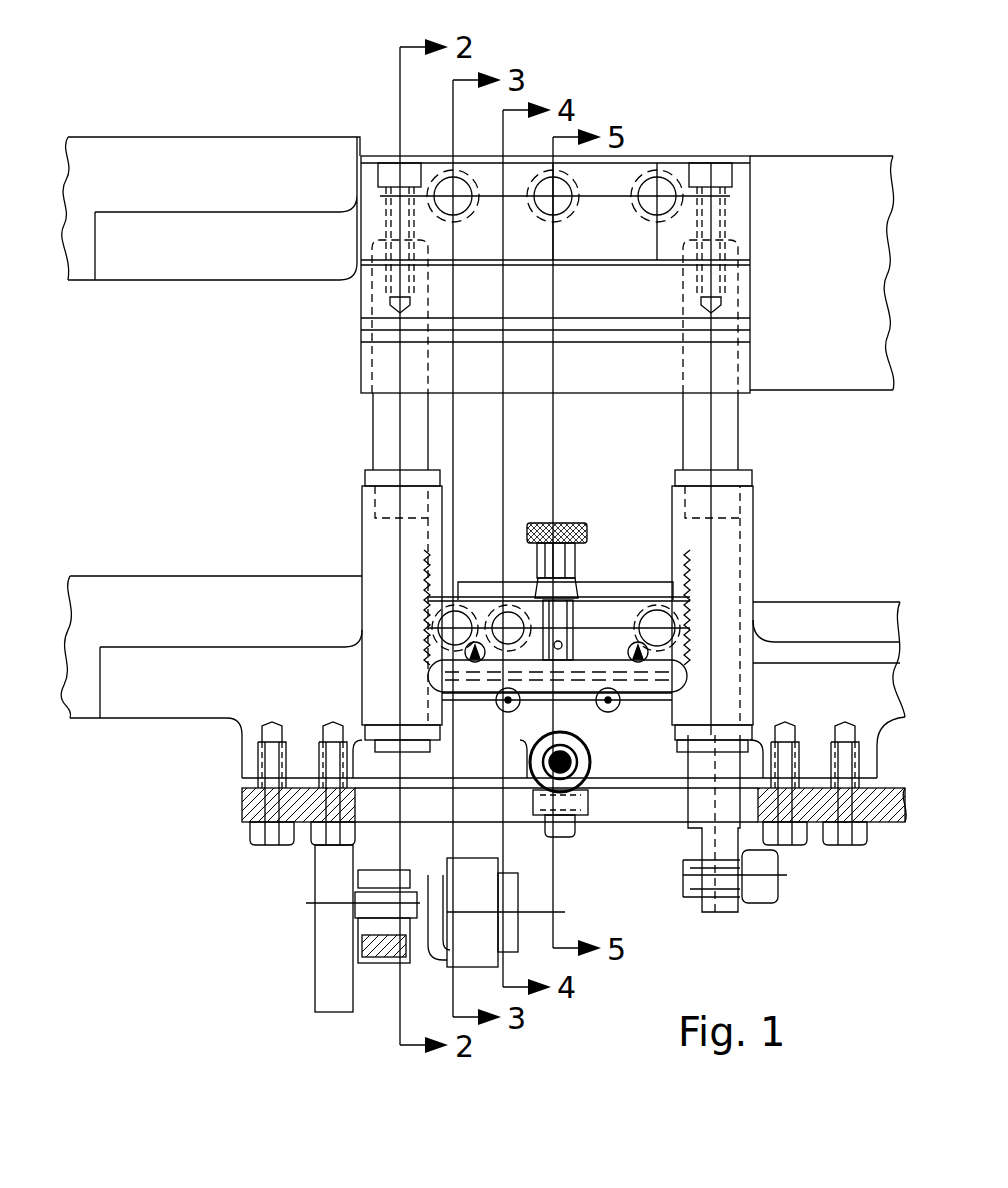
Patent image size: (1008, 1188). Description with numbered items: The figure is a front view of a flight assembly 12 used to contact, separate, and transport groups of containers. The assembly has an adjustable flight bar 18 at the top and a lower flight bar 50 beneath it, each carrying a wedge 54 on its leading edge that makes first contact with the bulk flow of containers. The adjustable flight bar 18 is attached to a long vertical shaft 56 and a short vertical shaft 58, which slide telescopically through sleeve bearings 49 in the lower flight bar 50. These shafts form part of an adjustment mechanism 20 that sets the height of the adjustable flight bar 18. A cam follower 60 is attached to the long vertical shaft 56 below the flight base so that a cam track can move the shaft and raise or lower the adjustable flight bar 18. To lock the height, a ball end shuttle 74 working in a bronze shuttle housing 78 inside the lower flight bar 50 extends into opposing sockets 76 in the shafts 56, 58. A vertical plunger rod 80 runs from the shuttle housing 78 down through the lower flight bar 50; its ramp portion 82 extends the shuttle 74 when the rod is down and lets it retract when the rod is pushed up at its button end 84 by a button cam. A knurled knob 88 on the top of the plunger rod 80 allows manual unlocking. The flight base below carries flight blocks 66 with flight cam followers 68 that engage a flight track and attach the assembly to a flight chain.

The flight assembly 12 is at (145, 912).
The adjustable flight bar 18 is at (338, 298).
The adjustment mechanism 20 is at (680, 862).
The sleeve bearings 49 is at (440, 480).
The lower flight bar 50 is at (213, 752).
The wedge 54 is at (155, 137).
The long vertical shaft 56 is at (742, 395).
The short vertical shaft 58 is at (373, 430).
The cam follower 60 is at (780, 890).
The flight blocks 66 is at (315, 957).
The flight cam followers 68 is at (478, 967).
The ball end shuttle 74 is at (496, 706).
The sockets 76 is at (430, 575).
The shuttle housing 78 is at (640, 708).
The plunger rod 80 is at (578, 856).
The ramp portion 82 is at (570, 685).
The button end 84 is at (642, 802).
The knurled knob 88 is at (558, 520).